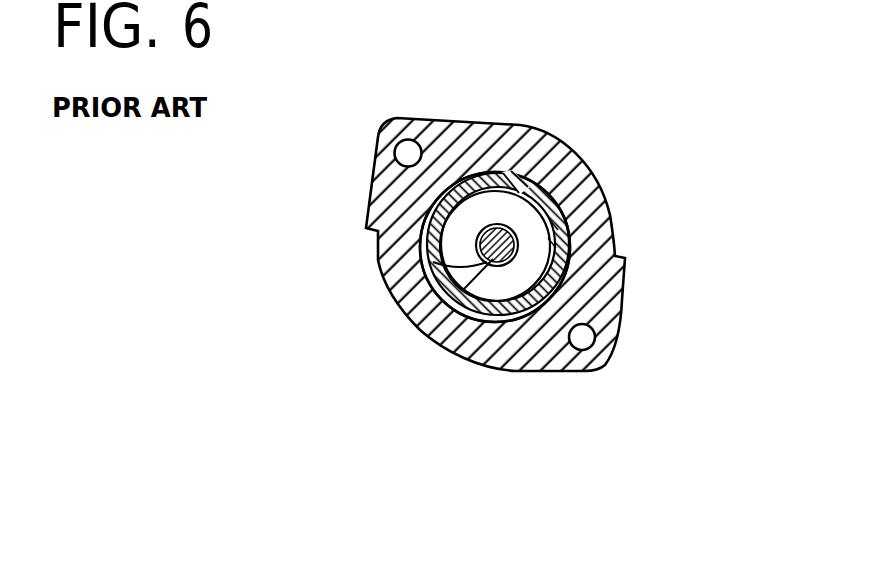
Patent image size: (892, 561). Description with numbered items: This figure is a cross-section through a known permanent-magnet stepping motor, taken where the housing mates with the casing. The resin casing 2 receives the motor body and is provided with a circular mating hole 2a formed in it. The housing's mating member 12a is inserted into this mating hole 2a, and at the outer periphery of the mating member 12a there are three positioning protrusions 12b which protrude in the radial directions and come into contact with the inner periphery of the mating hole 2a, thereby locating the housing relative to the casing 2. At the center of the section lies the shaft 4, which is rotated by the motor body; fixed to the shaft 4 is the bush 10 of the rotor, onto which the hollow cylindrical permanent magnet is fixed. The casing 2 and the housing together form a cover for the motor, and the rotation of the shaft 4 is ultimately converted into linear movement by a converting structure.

The resin casing 2 is at (597, 212).
The circular mating hole 2a is at (563, 272).
The shaft 4 is at (434, 302).
The bush 10 is at (433, 262).
The mating member 12a is at (558, 192).
The positioning protrusions 12b is at (527, 158).